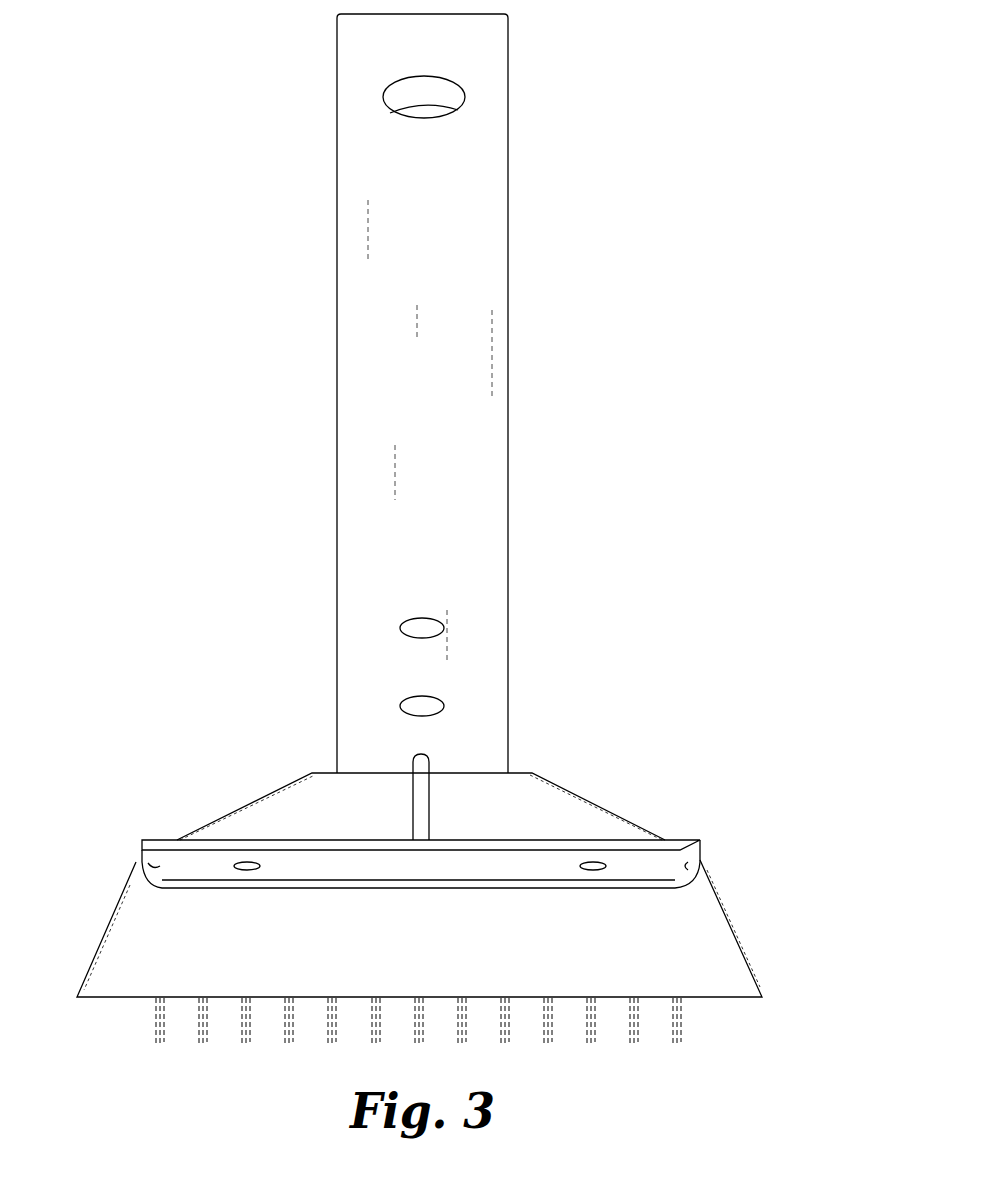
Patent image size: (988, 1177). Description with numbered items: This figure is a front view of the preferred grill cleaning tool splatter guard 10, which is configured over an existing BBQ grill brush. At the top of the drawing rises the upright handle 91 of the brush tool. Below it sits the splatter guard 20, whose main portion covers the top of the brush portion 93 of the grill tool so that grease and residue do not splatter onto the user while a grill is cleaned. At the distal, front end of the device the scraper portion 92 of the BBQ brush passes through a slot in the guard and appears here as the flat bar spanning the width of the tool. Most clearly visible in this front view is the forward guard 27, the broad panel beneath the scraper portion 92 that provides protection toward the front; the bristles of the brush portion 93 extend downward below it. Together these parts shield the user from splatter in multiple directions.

The grill cleaning tool splatter guard 10 is at (194, 328).
The handle 91 is at (481, 282).
The splatter guard 20 is at (563, 808).
The scraper portion 92 is at (688, 841).
The forward guard 27 is at (131, 943).
The brush portion 93 is at (673, 1033).